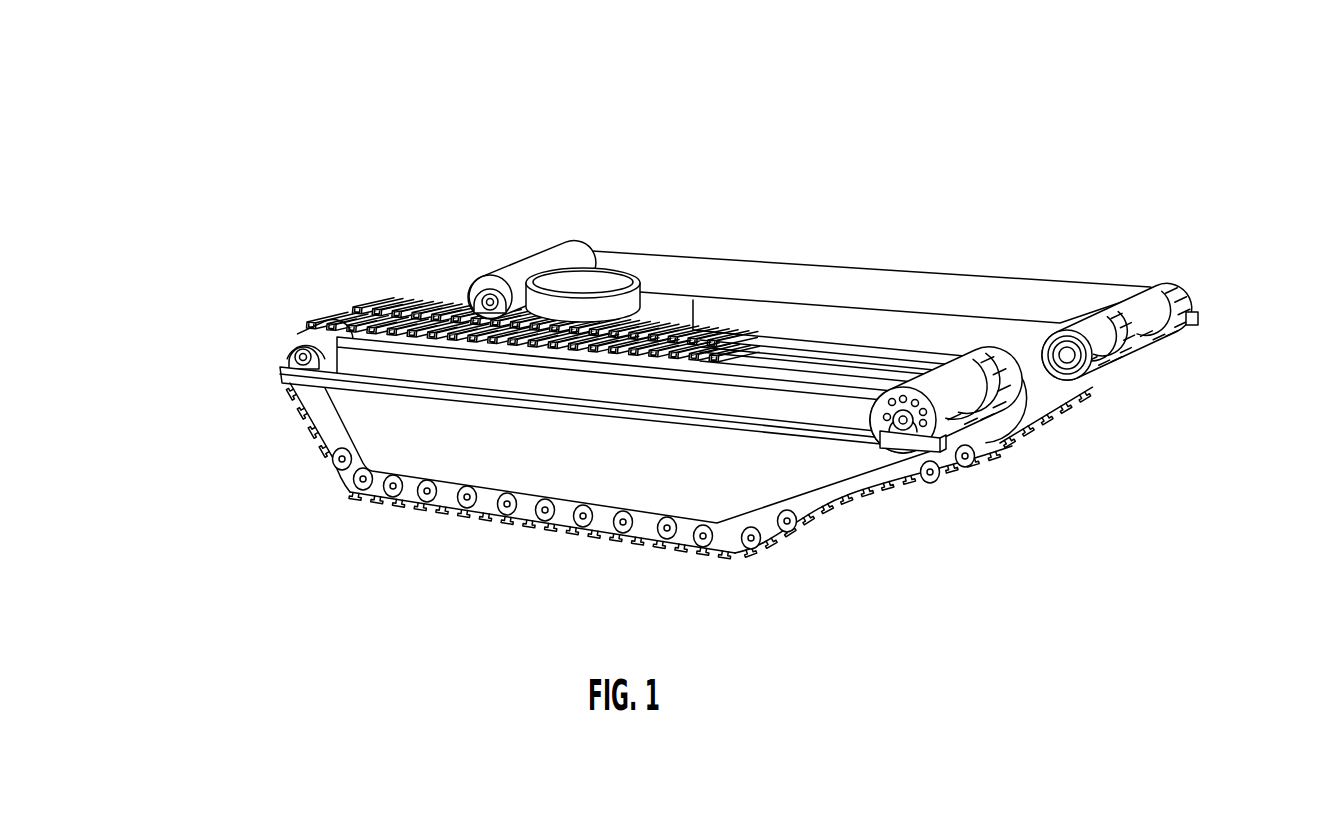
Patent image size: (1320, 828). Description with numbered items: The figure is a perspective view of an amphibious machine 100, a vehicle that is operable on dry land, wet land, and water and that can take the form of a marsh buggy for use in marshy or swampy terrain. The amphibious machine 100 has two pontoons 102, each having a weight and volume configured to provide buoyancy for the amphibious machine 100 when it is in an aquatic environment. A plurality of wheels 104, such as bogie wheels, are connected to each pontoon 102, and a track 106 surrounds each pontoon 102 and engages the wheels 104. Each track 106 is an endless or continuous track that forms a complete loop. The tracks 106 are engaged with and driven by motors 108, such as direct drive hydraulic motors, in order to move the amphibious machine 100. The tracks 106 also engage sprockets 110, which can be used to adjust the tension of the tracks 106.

The amphibious machine 100 is at (708, 329).
The pontoon 102 is at (803, 472).
The wheels 104 is at (333, 460).
The track 106 is at (330, 280).
The motors 108 is at (1175, 300).
The sprockets 110 is at (470, 290).